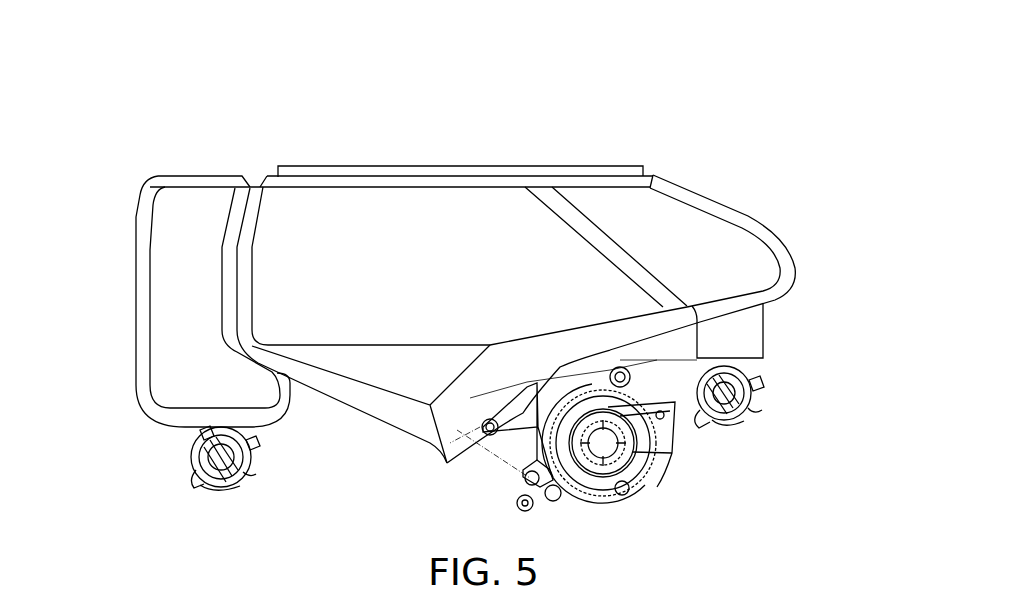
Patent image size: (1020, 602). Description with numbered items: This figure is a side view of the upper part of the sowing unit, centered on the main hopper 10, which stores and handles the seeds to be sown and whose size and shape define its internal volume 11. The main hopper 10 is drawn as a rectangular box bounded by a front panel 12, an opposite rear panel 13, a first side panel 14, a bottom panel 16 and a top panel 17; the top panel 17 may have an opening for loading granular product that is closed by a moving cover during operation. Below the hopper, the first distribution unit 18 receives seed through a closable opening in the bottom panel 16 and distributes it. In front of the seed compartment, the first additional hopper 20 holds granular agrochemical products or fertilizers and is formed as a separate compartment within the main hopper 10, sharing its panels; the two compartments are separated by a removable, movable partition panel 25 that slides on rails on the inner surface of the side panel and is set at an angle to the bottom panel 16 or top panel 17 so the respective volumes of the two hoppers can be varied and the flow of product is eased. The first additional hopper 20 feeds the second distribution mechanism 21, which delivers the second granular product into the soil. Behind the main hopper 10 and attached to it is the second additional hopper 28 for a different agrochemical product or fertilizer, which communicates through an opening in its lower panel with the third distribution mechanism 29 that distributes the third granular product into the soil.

The main hopper 10 is at (282, 150).
The internal volume 11 is at (377, 243).
The front panel 12 is at (753, 218).
The rear panel 13 is at (253, 233).
The first side panel 14 is at (352, 320).
The bottom panel 16 is at (413, 347).
The top panel 17 is at (455, 166).
The first distribution unit 18 is at (623, 520).
The first additional hopper 20 is at (683, 165).
The second distribution mechanism 21 is at (780, 383).
The partition panel 25 is at (583, 213).
The second additional hopper 28 is at (167, 267).
The third distribution mechanism 29 is at (173, 447).